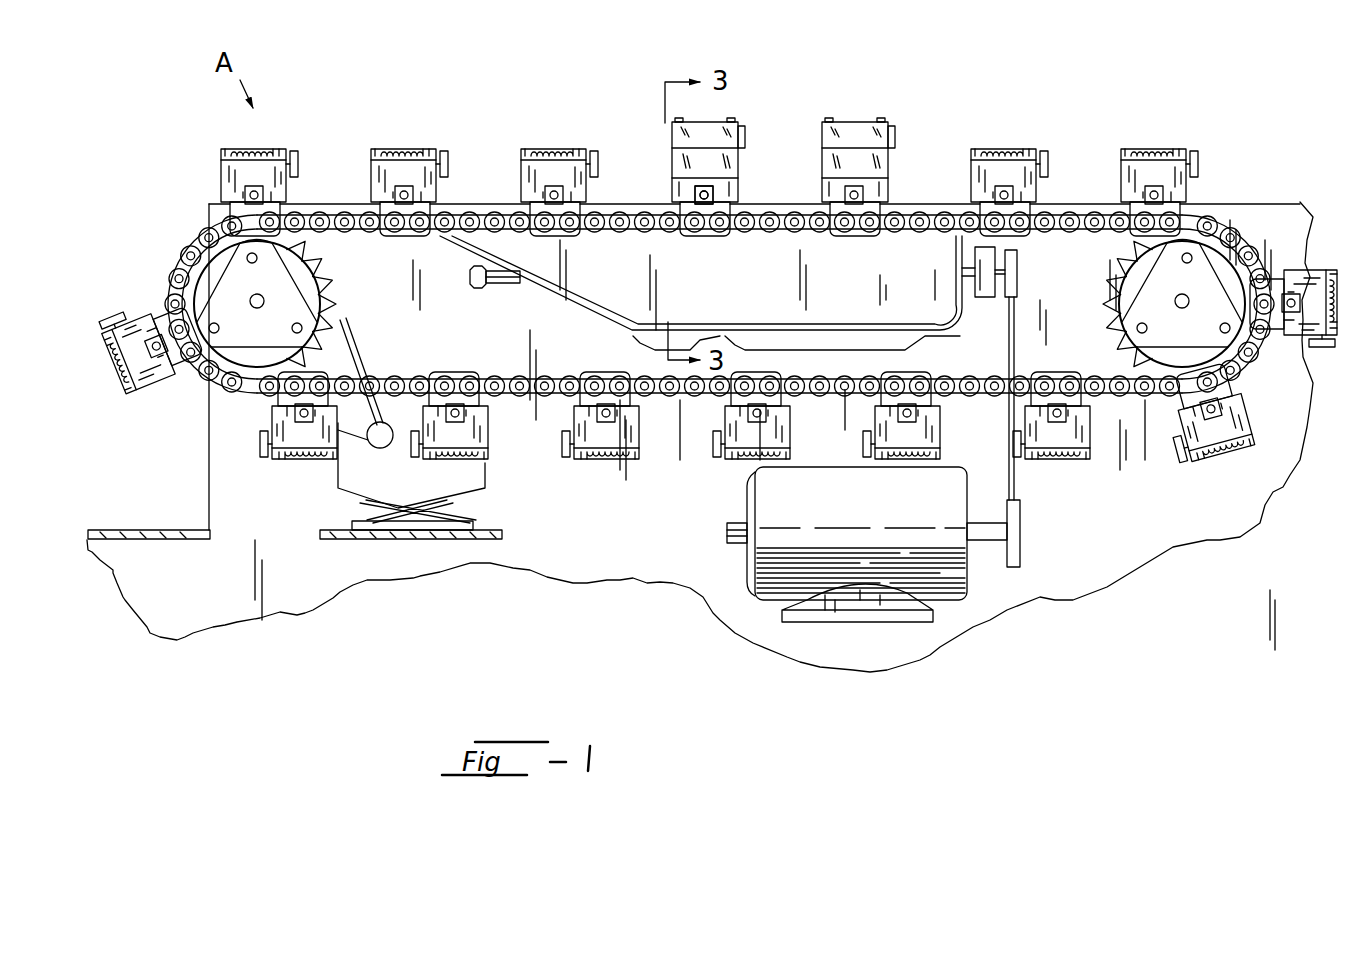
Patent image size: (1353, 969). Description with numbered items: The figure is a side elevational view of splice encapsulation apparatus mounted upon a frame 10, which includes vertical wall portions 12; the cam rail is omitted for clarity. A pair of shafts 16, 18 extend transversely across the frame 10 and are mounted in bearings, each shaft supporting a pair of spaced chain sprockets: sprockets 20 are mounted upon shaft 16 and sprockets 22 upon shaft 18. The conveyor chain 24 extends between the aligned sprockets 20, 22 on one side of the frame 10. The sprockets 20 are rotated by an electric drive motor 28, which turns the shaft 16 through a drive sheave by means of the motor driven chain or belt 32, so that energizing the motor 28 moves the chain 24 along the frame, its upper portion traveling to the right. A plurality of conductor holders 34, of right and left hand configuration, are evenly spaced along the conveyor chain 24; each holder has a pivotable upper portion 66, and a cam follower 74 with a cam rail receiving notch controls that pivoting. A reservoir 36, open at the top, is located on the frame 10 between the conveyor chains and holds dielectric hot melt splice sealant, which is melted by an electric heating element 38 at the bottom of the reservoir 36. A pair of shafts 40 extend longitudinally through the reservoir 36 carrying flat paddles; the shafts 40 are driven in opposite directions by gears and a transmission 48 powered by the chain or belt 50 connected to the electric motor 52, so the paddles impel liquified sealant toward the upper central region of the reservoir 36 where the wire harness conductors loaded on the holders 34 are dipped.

The frame 10 is at (1168, 560).
The vertical wall portions 12 is at (357, 572).
The shaft 16 is at (250, 306).
The shaft 18 is at (1190, 312).
The sprockets 20 is at (323, 278).
The sprockets 22 is at (1098, 271).
The conveyor chain 24 is at (768, 240).
The electric drive motor 28 is at (424, 497).
The motor driven chain or belt 32 is at (352, 338).
The conductor holders 34 is at (522, 148).
The reservoir 36 is at (903, 282).
The electric heating element 38 is at (824, 350).
The shafts 40 is at (503, 288).
The transmission 48 is at (985, 298).
The chain or belt 50 is at (1020, 490).
The electric motor 52 is at (870, 525).
The conductor holder upper portion 66 is at (891, 133).
The cam follower 74 is at (718, 190).